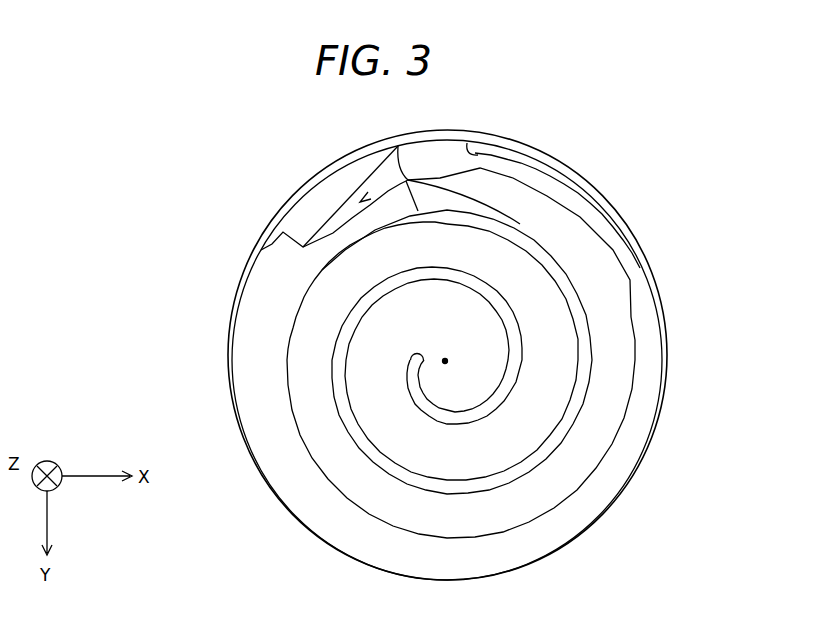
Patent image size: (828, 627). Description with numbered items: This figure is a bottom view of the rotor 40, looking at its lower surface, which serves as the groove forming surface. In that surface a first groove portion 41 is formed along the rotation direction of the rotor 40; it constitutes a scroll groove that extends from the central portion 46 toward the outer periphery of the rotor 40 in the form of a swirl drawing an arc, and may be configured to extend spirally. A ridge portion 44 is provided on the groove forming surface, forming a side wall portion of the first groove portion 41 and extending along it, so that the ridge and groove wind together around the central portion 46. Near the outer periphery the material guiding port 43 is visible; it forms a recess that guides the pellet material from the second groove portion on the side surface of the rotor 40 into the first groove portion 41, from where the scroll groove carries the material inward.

The rotor 40 is at (629, 166).
The first groove portion 41 is at (552, 342).
The material guiding port 43 is at (430, 163).
The ridge portion 44 is at (340, 377).
The central portion 46 is at (458, 378).